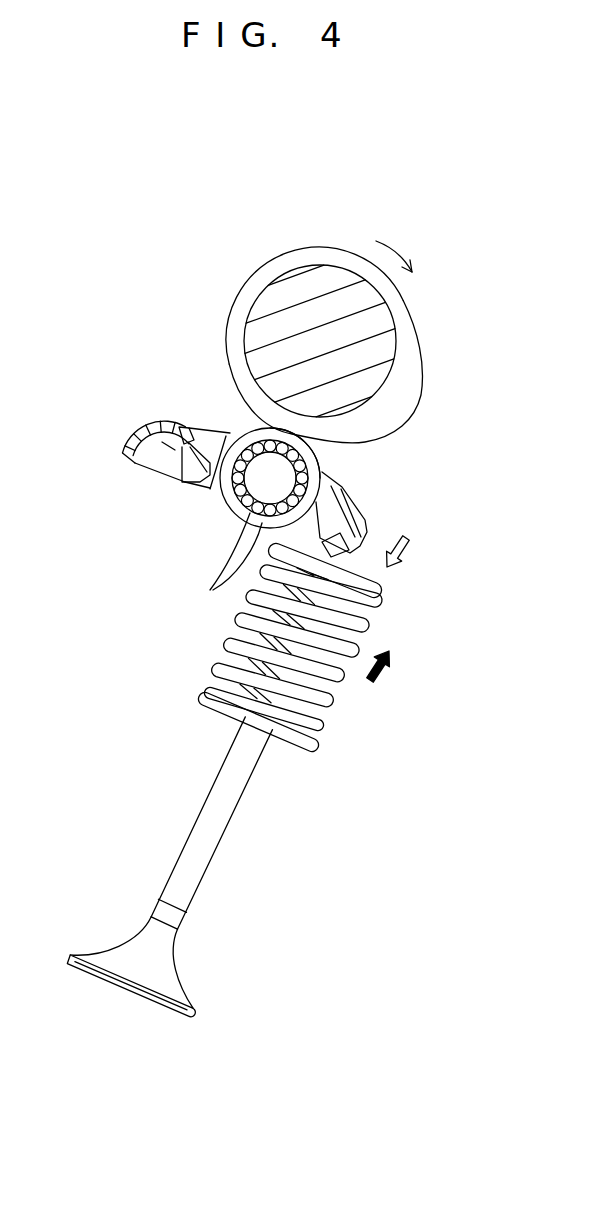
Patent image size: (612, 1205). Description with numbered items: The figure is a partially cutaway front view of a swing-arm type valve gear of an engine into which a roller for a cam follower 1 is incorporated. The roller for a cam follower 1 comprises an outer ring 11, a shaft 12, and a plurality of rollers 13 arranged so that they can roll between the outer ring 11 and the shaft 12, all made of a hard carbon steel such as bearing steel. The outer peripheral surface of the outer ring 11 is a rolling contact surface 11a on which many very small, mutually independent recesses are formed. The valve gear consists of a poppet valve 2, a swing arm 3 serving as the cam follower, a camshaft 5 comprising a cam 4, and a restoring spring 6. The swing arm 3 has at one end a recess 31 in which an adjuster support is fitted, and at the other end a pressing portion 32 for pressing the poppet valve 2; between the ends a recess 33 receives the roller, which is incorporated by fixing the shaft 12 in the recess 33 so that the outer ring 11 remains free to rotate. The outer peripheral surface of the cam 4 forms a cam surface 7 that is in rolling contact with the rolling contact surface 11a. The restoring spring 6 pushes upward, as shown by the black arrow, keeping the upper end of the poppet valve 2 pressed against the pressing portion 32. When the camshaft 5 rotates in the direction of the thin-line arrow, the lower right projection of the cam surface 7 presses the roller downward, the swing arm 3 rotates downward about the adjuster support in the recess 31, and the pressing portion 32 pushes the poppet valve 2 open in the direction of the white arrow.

The roller for a cam follower 1 is at (210, 513).
The poppet valve 2 is at (208, 863).
The swing arm 3 is at (119, 418).
The cam 4 is at (412, 342).
The camshaft 5 is at (324, 234).
The restoring spring 6 is at (230, 643).
The cam surface 7 is at (234, 297).
The outer ring 11 is at (236, 432).
The rolling contact surface 11a is at (320, 456).
The shaft 12 is at (267, 478).
The rollers 13 is at (224, 571).
The recess 31 is at (157, 460).
The pressing portion 32 is at (357, 520).
The recess 33 is at (232, 430).